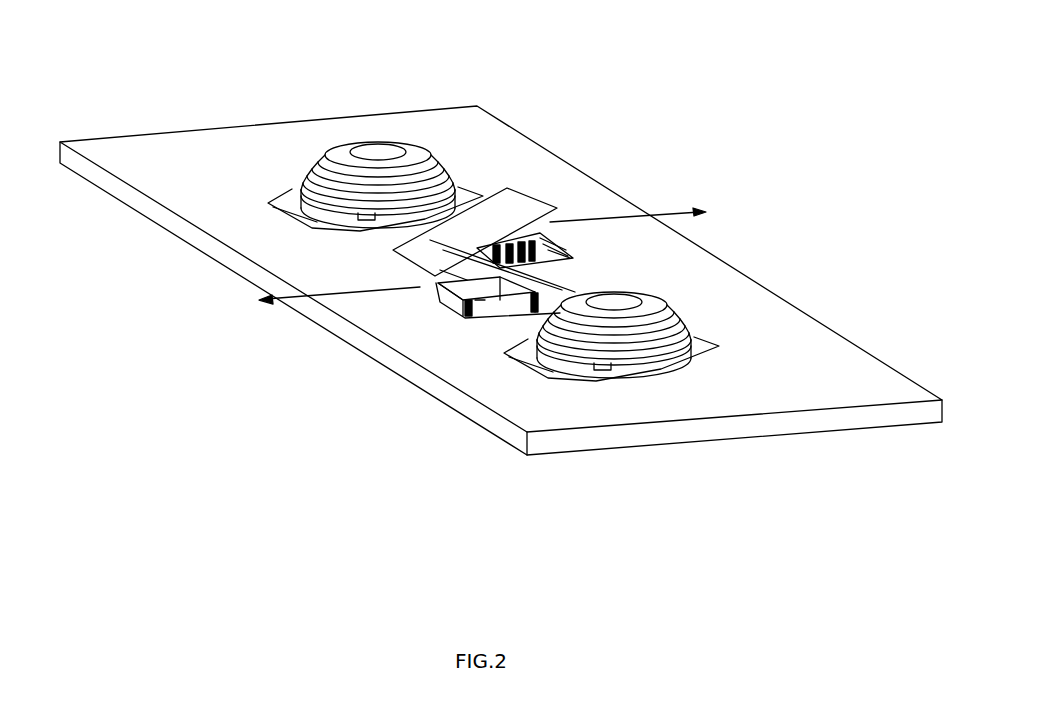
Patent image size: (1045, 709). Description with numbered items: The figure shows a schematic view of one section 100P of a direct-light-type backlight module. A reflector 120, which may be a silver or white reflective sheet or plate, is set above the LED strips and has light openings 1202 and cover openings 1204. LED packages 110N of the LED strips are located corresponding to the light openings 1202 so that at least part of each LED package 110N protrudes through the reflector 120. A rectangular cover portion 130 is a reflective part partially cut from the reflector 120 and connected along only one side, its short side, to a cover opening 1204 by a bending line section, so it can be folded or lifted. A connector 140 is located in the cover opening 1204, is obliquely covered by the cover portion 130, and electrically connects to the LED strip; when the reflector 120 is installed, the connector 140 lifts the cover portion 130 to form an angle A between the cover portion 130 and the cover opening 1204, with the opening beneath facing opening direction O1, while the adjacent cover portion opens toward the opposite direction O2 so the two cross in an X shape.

The section of the direct-light-type backlight module 100P is at (82, 31).
The reflector 120 is at (440, 127).
The light opening 1202 is at (713, 346).
The cover opening 1204 is at (430, 304).
The cover portion 130 is at (518, 203).
The connector 140 is at (472, 303).
The LED package 110N is at (682, 308).
The angle A is at (480, 303).